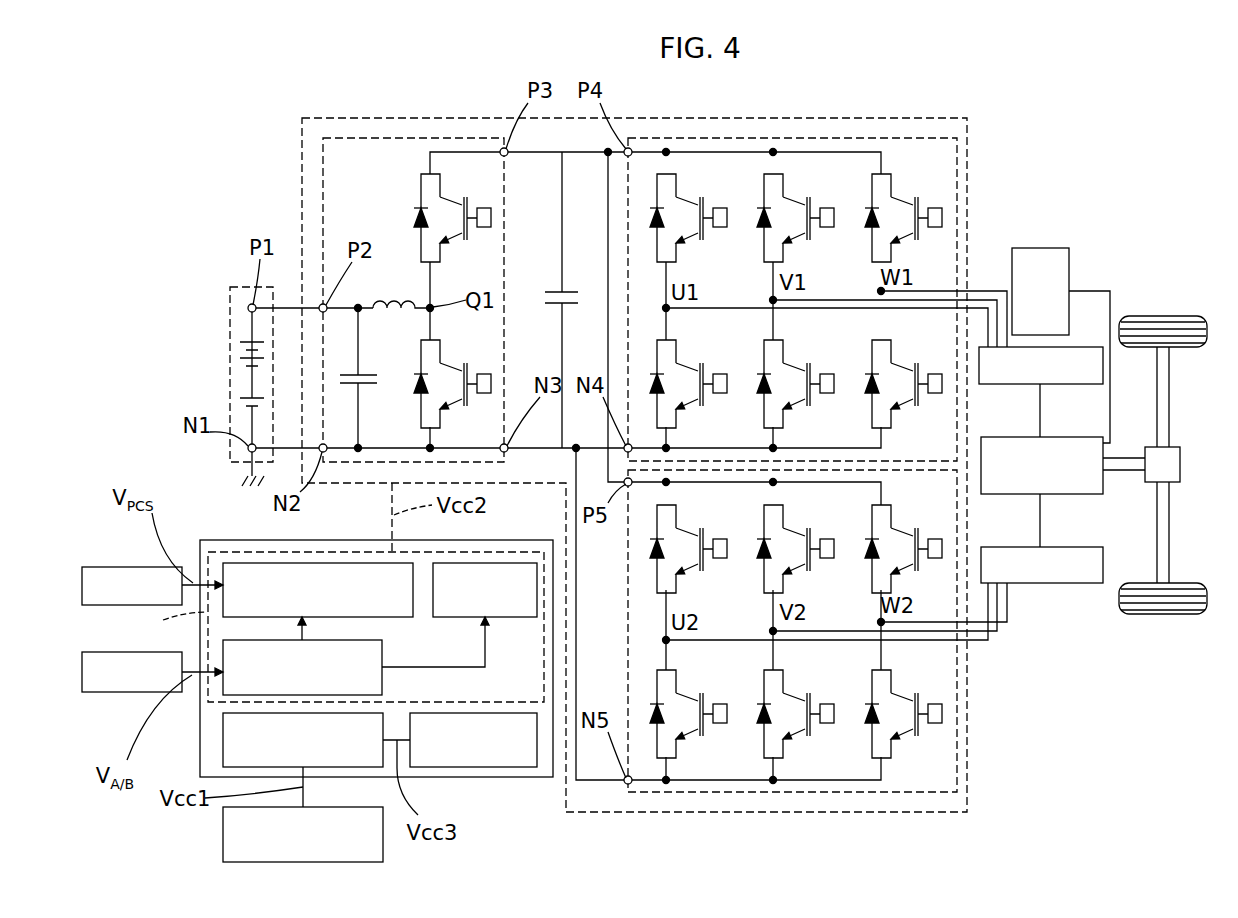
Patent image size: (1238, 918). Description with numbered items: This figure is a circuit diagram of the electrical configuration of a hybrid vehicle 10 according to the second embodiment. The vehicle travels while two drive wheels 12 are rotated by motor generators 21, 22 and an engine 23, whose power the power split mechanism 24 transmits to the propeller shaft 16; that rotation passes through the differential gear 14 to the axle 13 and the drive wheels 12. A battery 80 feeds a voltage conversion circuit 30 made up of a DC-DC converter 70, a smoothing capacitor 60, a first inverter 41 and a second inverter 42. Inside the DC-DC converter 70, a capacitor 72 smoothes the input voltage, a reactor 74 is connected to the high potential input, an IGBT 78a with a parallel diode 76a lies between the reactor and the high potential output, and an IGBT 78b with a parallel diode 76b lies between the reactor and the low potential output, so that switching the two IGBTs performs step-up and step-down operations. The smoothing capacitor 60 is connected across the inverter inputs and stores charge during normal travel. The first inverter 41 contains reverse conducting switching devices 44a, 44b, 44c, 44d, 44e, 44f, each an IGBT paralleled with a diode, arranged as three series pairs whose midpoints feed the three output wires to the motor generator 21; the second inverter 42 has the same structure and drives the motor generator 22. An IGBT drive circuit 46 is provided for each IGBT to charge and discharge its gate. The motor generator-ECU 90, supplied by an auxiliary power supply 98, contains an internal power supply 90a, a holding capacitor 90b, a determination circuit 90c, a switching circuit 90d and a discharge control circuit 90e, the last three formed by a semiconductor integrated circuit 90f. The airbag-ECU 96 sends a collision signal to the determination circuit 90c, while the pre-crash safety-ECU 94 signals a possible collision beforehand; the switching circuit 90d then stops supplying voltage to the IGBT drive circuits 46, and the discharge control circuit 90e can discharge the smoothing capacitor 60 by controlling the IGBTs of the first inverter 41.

The hybrid vehicle 10 is at (268, 98).
The drive wheel 12 is at (1172, 315).
The axle 13 is at (1170, 398).
The differential gear 14 is at (1181, 460).
The propeller shaft 16 is at (1120, 472).
The motor generator 21 is at (1070, 385).
The motor generator 22 is at (1072, 584).
The engine 23 is at (1045, 247).
The power split mechanism 24 is at (1072, 495).
The voltage conversion circuit 30 is at (345, 118).
The first inverter 41 is at (912, 138).
The second inverter 42 is at (928, 793).
The reverse conducting switching device 44a is at (703, 240).
The reverse conducting switching device 44b is at (703, 406).
The reverse conducting switching device 44c is at (811, 240).
The reverse conducting switching device 44d is at (811, 406).
The reverse conducting switching device 44e is at (918, 240).
The reverse conducting switching device 44f is at (918, 406).
The IGBT drive circuit 46 is at (482, 207).
The smoothing capacitor 60 is at (556, 293).
The DC-DC converter 70 is at (437, 137).
The capacitor 72 is at (352, 372).
The reactor 74 is at (390, 303).
The diode 76a is at (413, 215).
The diode 76b is at (413, 381).
The IGBT 78a is at (458, 244).
The IGBT 78b is at (459, 409).
The battery 80 is at (236, 286).
The motor generator-ECU 90 is at (215, 541).
The internal power supply 90a is at (222, 740).
The holding capacitor 90b is at (512, 768).
The determination circuit 90c is at (206, 668).
The switching circuit 90d is at (515, 562).
The discharge control circuit 90e is at (365, 562).
The semiconductor integrated circuit 90f is at (167, 619).
The pre-crash safety-ECU 94 is at (100, 566).
The airbag-ECU 96 is at (100, 693).
The auxiliary power supply 98 is at (222, 835).